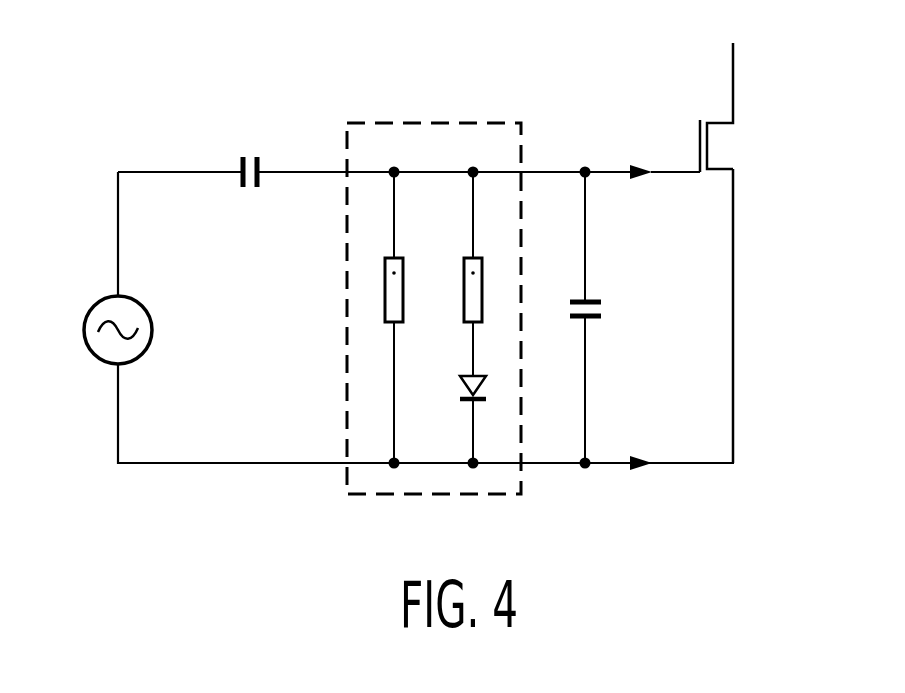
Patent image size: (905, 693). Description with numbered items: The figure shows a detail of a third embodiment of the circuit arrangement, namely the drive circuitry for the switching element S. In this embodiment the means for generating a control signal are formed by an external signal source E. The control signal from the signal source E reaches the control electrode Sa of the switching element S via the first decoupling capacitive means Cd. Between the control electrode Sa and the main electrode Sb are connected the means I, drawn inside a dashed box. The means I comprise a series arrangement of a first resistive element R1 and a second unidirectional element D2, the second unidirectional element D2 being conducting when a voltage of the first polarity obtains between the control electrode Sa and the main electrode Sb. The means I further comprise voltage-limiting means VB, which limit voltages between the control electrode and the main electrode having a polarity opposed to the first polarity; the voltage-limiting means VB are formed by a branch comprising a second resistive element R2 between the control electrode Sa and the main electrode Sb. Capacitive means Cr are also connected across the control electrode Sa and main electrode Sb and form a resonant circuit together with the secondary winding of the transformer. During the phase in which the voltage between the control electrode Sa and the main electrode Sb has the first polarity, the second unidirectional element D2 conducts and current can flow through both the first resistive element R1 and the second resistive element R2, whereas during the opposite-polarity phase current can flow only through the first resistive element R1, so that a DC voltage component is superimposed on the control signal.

The external signal source E is at (152, 332).
The first decoupling capacitive means Cd is at (252, 188).
The means I is at (418, 115).
The second resistive element R2 is at (385, 291).
The voltage-limiting means VB is at (403, 268).
The first resistive element R1 is at (482, 268).
The second unidirectional element D2 is at (460, 385).
The capacitive means Cr is at (601, 311).
The control electrode Sa is at (667, 168).
The switching element S is at (723, 147).
The main electrode Sb is at (734, 215).